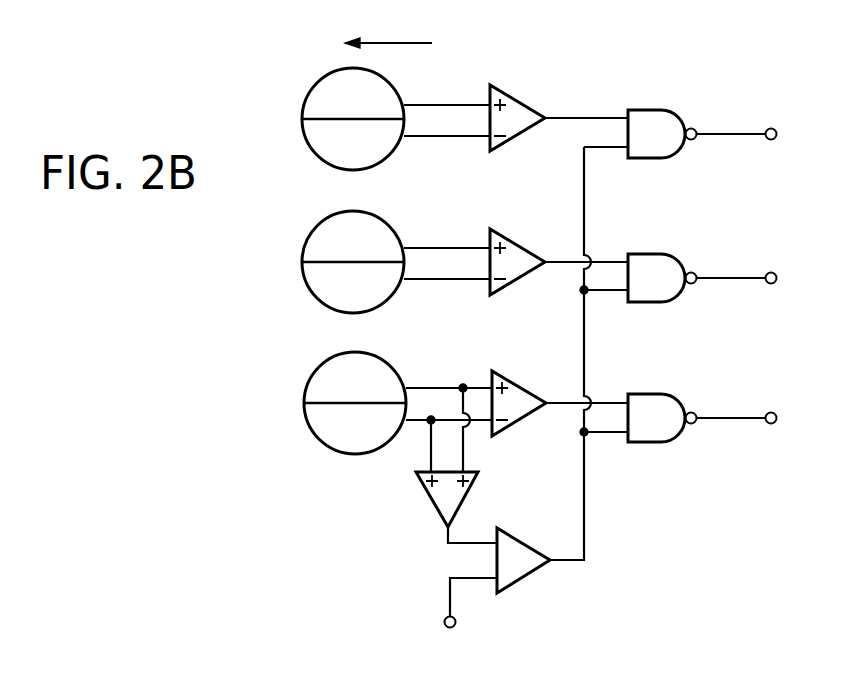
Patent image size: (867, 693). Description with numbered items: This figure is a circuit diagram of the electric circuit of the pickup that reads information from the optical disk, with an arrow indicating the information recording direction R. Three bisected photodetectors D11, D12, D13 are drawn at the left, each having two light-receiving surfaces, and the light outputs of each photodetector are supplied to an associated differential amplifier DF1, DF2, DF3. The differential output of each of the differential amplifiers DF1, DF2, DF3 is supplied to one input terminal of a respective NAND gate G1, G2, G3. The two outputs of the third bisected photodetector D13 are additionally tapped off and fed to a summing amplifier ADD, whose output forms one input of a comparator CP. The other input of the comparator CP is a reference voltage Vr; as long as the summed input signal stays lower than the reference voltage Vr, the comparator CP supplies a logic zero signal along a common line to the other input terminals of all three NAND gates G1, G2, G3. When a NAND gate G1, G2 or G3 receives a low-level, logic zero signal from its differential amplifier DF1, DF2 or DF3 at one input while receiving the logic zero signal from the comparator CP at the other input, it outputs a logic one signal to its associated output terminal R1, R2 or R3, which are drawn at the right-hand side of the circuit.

The information recording direction R is at (388, 31).
The bisected photodetector D11 is at (302, 105).
The bisected photodetector D12 is at (302, 248).
The bisected photodetector D13 is at (304, 389).
The differential amplifier DF1 is at (520, 110).
The differential amplifier DF2 is at (520, 254).
The differential amplifier DF3 is at (521, 395).
The NAND gate G1 is at (658, 123).
The NAND gate G2 is at (658, 267).
The NAND gate G3 is at (658, 407).
The output terminal R1 is at (754, 138).
The output terminal R2 is at (754, 282).
The output terminal R3 is at (754, 422).
The summing amplifier ADD is at (456, 497).
The comparator CP is at (525, 566).
The reference voltage Vr is at (468, 620).